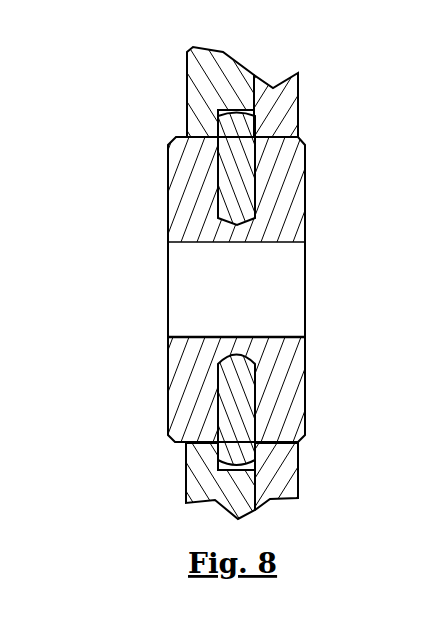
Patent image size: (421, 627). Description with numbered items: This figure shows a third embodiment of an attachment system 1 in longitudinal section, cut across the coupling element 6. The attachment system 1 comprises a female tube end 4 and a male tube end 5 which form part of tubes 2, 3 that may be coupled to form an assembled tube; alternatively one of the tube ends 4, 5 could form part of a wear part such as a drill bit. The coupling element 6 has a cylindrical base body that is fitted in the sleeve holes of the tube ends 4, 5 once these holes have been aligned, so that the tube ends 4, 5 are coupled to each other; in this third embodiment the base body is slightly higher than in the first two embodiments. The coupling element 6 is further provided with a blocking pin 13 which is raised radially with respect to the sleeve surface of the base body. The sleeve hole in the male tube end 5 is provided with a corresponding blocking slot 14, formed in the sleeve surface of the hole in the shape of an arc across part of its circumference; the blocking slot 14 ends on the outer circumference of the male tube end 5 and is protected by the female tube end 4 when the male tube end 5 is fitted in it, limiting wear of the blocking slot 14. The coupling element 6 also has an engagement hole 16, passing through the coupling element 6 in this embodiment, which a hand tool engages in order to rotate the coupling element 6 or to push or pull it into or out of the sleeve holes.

The attachment system 1 is at (116, 201).
The tube 2 is at (283, 100).
The tube 3 is at (193, 73).
The female tube end 4 is at (307, 474).
The male tube end 5 is at (176, 488).
The coupling element 6 is at (292, 378).
The blocking pin 13 is at (238, 175).
The blocking slot 14 is at (218, 110).
The engagement hole 16 is at (280, 288).